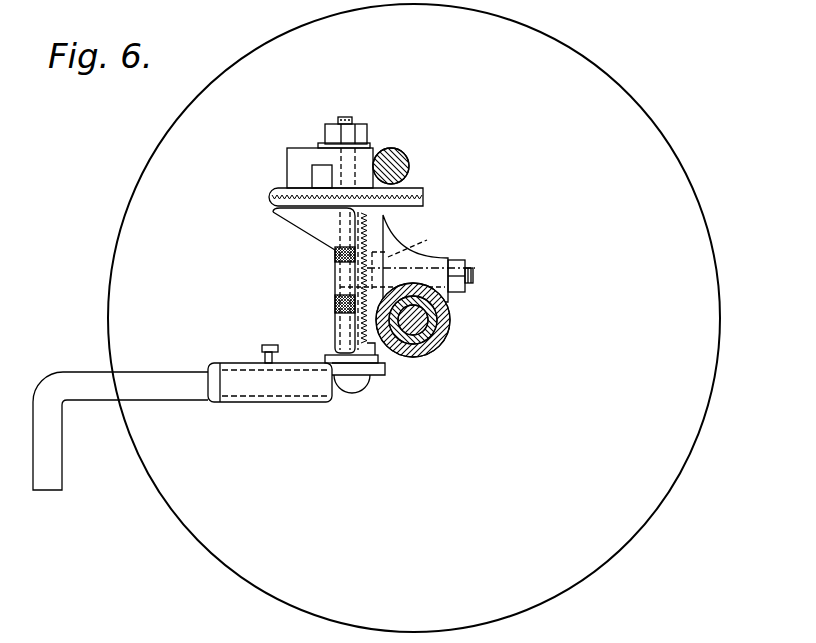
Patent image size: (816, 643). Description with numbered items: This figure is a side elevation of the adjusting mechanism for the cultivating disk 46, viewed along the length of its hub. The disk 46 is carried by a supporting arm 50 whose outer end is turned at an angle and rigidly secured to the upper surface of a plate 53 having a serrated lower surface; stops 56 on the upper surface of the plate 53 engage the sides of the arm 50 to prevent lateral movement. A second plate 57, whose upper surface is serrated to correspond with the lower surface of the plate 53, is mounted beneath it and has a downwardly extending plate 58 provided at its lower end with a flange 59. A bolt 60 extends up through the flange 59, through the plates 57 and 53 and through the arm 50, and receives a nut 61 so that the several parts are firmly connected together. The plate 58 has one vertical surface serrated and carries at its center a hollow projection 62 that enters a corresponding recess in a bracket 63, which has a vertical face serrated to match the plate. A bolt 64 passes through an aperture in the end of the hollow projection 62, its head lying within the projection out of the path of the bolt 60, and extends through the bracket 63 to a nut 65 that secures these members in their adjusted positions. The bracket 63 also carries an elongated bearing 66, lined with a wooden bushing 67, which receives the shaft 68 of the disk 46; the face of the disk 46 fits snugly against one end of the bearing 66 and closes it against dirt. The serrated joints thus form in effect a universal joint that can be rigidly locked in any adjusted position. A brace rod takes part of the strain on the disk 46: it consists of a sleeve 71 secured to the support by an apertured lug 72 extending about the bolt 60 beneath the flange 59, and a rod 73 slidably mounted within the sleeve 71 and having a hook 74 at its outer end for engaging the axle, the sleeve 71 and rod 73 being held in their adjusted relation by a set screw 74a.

The cultivating disk 46 is at (690, 310).
The supporting arm 50 is at (400, 152).
The plate 53 is at (413, 188).
The stops 56 is at (289, 172).
The second plate 57 is at (283, 203).
The downwardly extending plate 58 is at (360, 333).
The flange 59 is at (323, 362).
The bolt 60 is at (346, 118).
The nut 61 is at (360, 128).
The hollow projection 62 is at (425, 244).
The bracket 63 is at (383, 247).
The bolt 64 is at (474, 279).
The nut 65 is at (459, 262).
The elongated bearing 66 is at (450, 312).
The wooden bushing 67 is at (448, 333).
The shaft 68 is at (415, 324).
The sleeve 71 is at (308, 403).
The apertured lug 72 is at (380, 372).
The rod 73 is at (172, 361).
The hook 74 is at (52, 478).
The set screw 74a is at (262, 349).